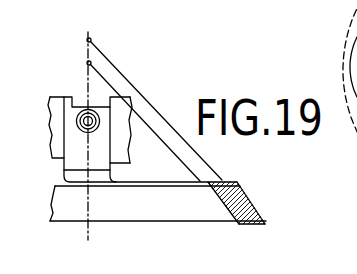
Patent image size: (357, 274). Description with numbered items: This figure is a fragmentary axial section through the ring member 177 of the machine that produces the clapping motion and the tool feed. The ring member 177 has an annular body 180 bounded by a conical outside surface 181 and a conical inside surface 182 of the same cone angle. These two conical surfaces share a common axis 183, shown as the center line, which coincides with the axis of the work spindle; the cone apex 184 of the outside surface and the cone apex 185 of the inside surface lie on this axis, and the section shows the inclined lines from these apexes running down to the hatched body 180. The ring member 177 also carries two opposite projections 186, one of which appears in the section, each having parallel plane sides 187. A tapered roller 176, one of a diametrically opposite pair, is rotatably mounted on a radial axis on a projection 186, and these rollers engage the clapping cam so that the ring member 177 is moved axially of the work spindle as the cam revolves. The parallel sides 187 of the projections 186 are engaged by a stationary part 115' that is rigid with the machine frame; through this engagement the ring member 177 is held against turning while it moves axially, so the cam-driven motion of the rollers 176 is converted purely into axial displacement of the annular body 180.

The stationary part 115' is at (38, 175).
The tapered rollers 176 is at (62, 122).
The ring member 177 is at (143, 208).
The annular body 180 is at (245, 195).
The conical outside surface 181 is at (258, 212).
The conical inside surface 182 is at (240, 225).
The common axis 183 is at (87, 225).
The cone apex 184 is at (91, 40).
The cone apex 185 is at (91, 63).
The projections 186 is at (76, 112).
The parallel plane sides 187 is at (110, 168).